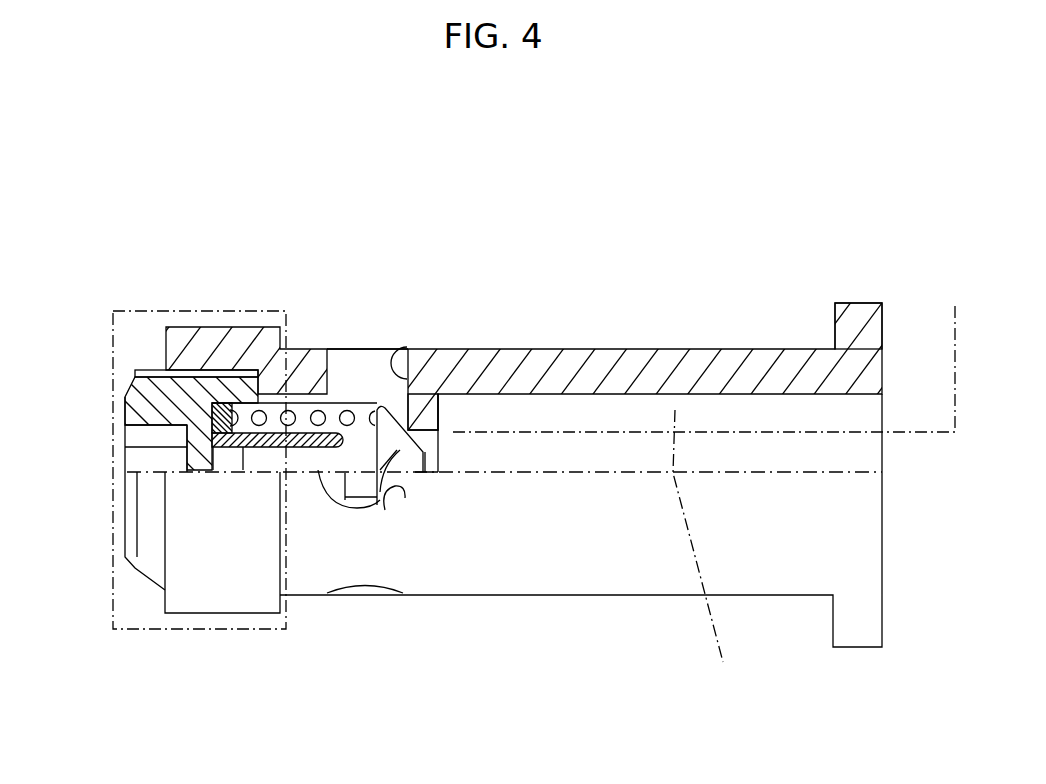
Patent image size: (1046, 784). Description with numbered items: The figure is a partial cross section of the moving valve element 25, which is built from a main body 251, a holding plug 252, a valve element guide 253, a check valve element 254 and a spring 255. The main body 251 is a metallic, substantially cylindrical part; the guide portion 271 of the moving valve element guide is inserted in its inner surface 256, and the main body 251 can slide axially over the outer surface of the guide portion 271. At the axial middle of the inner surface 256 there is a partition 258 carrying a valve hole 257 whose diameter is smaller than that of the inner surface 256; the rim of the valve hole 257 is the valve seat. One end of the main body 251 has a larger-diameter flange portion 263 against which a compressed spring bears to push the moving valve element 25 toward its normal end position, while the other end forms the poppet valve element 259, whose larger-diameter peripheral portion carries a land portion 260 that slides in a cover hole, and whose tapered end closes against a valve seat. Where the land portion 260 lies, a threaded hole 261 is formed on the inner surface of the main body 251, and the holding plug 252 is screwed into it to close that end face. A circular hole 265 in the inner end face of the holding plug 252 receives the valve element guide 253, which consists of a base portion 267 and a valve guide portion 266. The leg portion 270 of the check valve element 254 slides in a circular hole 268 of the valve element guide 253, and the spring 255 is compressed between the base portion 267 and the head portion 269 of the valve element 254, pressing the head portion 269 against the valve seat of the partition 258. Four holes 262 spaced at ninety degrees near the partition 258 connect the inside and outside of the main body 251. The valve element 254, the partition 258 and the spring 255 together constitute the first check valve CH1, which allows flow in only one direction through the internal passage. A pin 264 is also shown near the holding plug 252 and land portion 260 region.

The moving valve element 25 is at (745, 330).
The main body 251 is at (643, 350).
The holding plug 252 is at (142, 398).
The valve element guide 253 is at (272, 238).
The check valve element 254 is at (515, 706).
The spring 255 is at (355, 365).
The inner surface 256 is at (598, 417).
The valve hole 257 is at (438, 443).
The partition 258 is at (416, 420).
The poppet valve element 259 is at (137, 632).
The land portion 260 is at (207, 616).
The threaded hole 261 is at (188, 381).
The hole 262 is at (397, 352).
The flange portion 263 is at (857, 330).
The pin 264 is at (140, 457).
The hole 265 is at (268, 421).
The valve guide portion 266 is at (316, 410).
The base portion 267 is at (234, 402).
The circular hole 268 is at (307, 458).
The head portion 269 is at (380, 510).
The leg portion 270 is at (307, 458).
The guide portion 271 is at (504, 551).
The first check valve CH1 is at (318, 540).